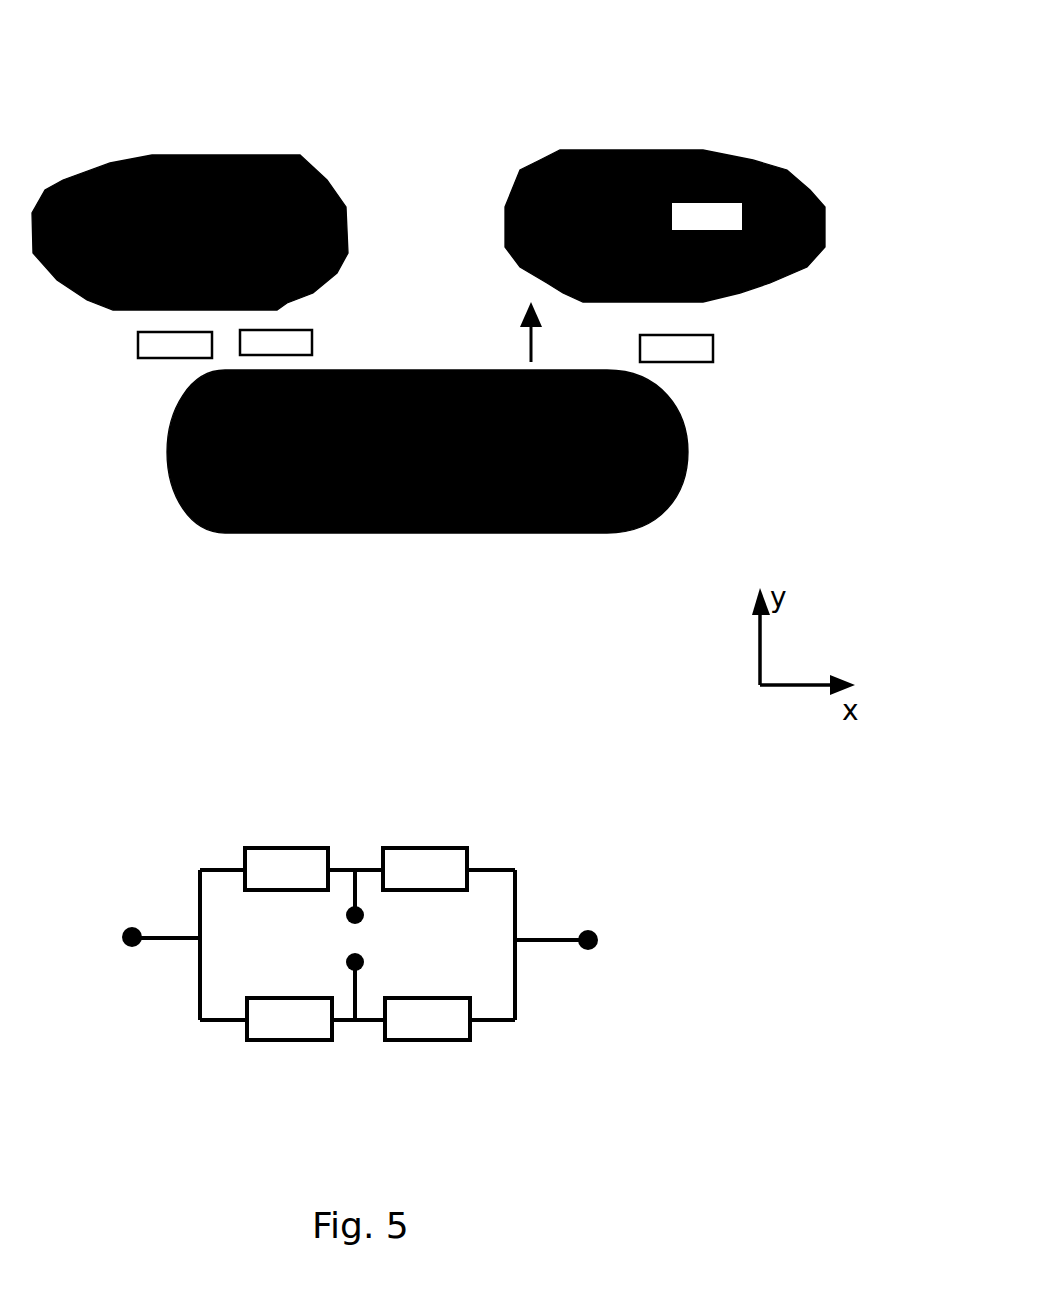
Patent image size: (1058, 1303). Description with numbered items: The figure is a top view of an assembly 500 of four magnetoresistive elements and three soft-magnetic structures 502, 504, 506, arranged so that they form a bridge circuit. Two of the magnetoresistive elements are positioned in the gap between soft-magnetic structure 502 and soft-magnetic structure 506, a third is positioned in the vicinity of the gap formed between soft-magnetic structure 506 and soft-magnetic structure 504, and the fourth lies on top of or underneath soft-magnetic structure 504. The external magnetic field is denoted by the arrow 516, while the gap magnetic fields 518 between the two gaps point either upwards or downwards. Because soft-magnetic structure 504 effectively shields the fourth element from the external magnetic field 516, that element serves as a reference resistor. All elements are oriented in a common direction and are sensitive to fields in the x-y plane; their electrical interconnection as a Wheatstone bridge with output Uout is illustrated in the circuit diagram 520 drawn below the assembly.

The assembly 500 is at (812, 93).
The soft-magnetic structure 502 is at (215, 155).
The soft-magnetic structure 504 is at (535, 168).
The soft-magnetic structure 506 is at (168, 440).
The external magnetic field 516 is at (506, 228).
The gap magnetic fields 518 is at (530, 358).
The circuit diagram 520 is at (425, 940).